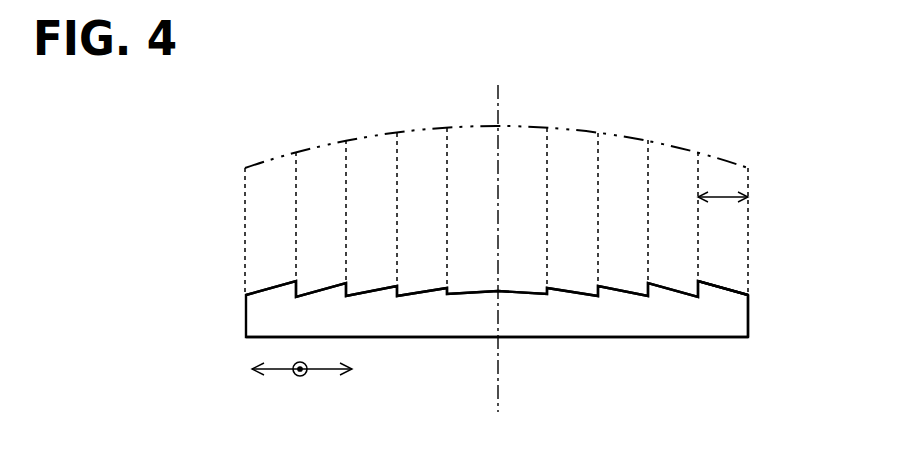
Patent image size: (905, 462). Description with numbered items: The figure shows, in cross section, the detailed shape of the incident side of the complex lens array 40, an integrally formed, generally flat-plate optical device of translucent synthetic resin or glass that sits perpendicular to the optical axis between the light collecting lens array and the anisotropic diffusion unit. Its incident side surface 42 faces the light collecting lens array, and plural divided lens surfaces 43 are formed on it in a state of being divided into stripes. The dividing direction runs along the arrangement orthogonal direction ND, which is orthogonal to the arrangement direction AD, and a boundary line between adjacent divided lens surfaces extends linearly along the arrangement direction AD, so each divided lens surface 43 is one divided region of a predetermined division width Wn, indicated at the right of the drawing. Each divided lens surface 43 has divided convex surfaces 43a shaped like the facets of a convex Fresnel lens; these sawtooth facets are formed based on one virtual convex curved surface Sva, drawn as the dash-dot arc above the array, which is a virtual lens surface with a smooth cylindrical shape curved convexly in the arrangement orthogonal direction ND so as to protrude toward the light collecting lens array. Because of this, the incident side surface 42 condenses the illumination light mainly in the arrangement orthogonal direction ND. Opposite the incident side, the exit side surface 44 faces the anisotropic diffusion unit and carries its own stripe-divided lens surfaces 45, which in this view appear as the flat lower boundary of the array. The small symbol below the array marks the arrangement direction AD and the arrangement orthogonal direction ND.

The complex lens array 40 is at (246, 314).
The incident side surface 42 is at (744, 291).
The divided lens surface 43 is at (271, 288).
The divided convex surface 43a is at (321, 282).
The exit side surface 44 is at (723, 338).
The divided lens surface 45 is at (652, 338).
The virtual convex curved surface Sva is at (568, 128).
The division width Wn is at (723, 195).
The arrangement orthogonal direction ND is at (277, 370).
The arrangement direction AD is at (300, 378).